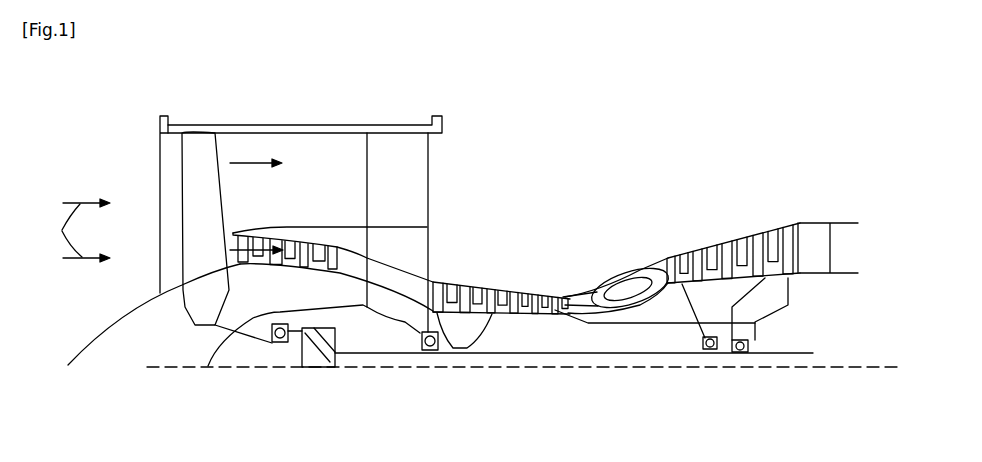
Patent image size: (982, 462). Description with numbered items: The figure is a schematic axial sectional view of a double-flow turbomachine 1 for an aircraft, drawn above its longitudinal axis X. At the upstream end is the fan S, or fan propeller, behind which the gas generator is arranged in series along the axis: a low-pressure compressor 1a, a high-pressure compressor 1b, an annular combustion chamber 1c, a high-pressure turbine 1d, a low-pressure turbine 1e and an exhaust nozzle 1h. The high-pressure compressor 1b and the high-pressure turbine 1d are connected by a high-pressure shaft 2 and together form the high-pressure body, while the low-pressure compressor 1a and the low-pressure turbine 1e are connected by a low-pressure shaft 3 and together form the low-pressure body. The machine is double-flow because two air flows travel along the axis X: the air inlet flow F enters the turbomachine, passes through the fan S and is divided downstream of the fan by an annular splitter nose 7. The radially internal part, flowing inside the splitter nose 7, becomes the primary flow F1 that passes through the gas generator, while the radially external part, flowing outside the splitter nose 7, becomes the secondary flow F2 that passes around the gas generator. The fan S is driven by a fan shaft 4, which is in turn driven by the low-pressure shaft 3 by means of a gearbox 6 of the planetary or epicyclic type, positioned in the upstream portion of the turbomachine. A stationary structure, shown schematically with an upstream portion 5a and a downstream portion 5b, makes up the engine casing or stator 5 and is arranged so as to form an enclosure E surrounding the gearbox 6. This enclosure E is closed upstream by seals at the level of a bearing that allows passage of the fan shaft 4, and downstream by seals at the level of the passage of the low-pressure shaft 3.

The turbomachine 1 is at (558, 170).
The low-pressure compressor 1a is at (252, 233).
The high-pressure compressor 1b is at (455, 284).
The annular combustion chamber 1c is at (628, 282).
The high-pressure turbine 1d is at (662, 272).
The low-pressure turbine 1e is at (790, 222).
The exhaust nozzle 1h is at (845, 255).
The high-pressure shaft 2 is at (607, 328).
The low-pressure shaft 3 is at (525, 354).
The fan shaft 4 is at (262, 344).
The engine casing or stator 5 is at (348, 303).
The upstream portion 5a is at (210, 368).
The downstream portion 5b is at (416, 340).
The gearbox 6 is at (317, 350).
The splitter 7 is at (233, 230).
The fan S is at (193, 188).
The enclosure E is at (343, 330).
The longitudinal axis X is at (68, 367).
The air inlet flow F is at (75, 230).
The primary flow F1 is at (253, 262).
The secondary flow F2 is at (237, 157).